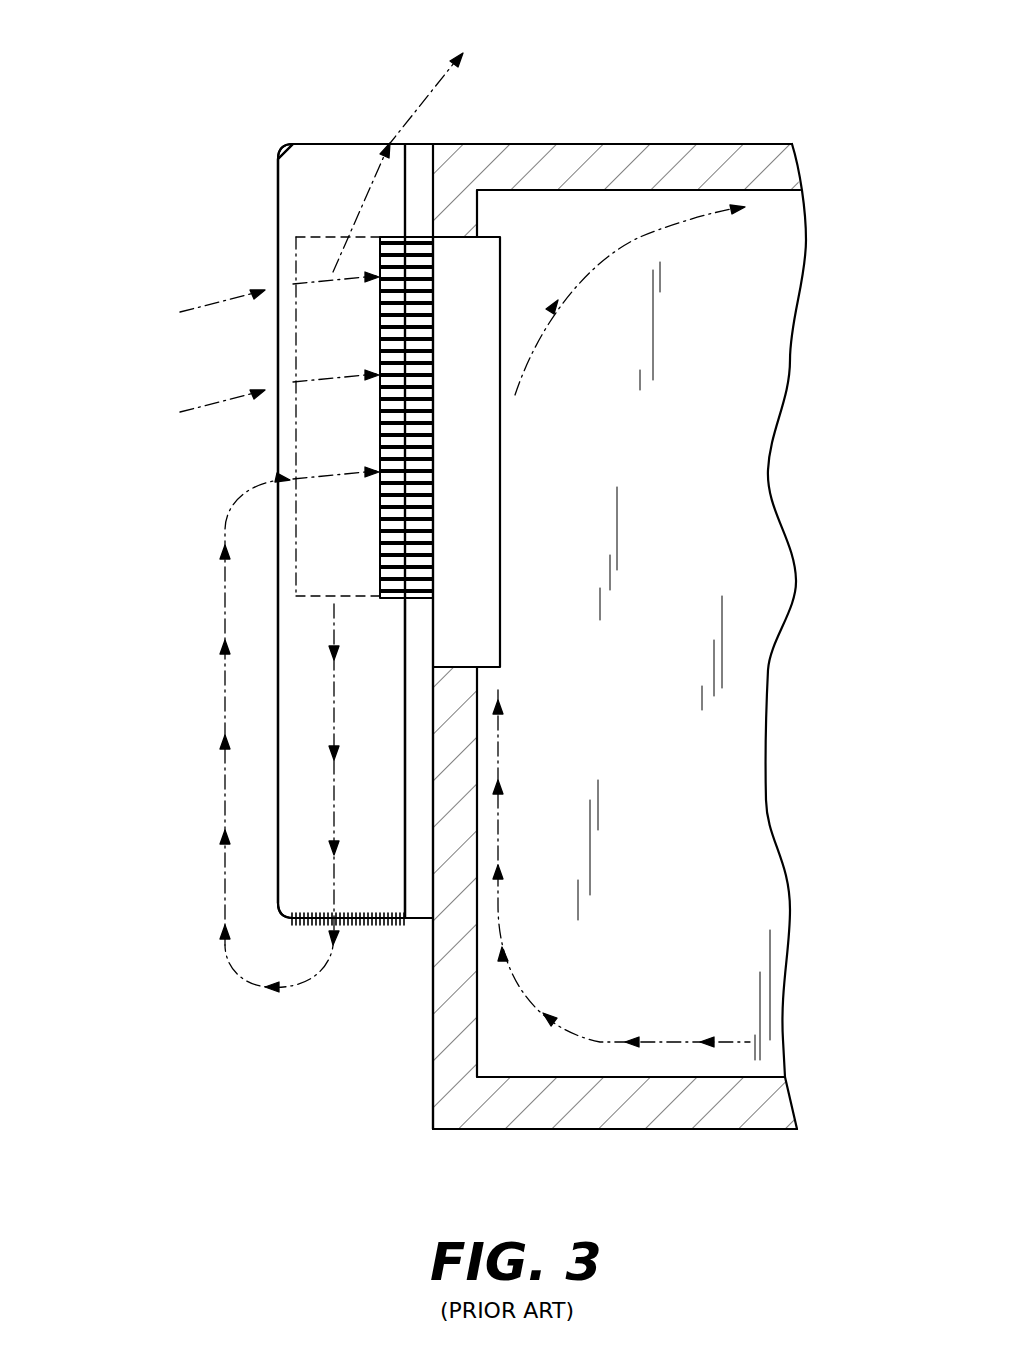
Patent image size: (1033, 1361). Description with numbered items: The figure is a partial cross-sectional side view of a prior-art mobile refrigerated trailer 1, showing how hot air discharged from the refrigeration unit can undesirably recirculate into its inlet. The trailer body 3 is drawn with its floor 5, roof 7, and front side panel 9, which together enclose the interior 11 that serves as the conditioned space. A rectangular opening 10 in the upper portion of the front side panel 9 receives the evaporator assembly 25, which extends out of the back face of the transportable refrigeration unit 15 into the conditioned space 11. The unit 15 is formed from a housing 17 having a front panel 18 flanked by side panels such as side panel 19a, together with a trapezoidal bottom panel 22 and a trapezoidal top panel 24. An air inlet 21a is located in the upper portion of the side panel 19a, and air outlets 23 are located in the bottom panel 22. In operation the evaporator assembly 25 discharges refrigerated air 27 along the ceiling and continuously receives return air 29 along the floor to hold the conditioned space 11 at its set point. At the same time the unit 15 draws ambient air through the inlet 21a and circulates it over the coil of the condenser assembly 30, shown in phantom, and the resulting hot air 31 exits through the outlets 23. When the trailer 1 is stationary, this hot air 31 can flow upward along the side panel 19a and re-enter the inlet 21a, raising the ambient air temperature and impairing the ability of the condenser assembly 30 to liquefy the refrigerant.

The mobile refrigerated trailer 1 is at (266, 148).
The trailer body 3 is at (587, 135).
The floor 5 is at (705, 1133).
The roof 7 is at (720, 144).
The front side panel 9 is at (428, 1088).
The rectangular opening 10 is at (460, 667).
The interior 11 is at (735, 520).
The transportable refrigeration unit 15 is at (272, 252).
The housing 17 is at (272, 586).
The front panel 18 is at (278, 440).
The side panel 19a is at (300, 703).
The air inlet 21a is at (422, 441).
The bottom panel 22 is at (377, 930).
The air outlets 23 is at (347, 922).
The top panel 24 is at (324, 144).
The evaporator assembly 25 is at (490, 543).
The refrigerated air 27 is at (572, 280).
The return air 29 is at (652, 1040).
The condenser assembly 30 is at (300, 329).
The hot air 31 is at (418, 108).